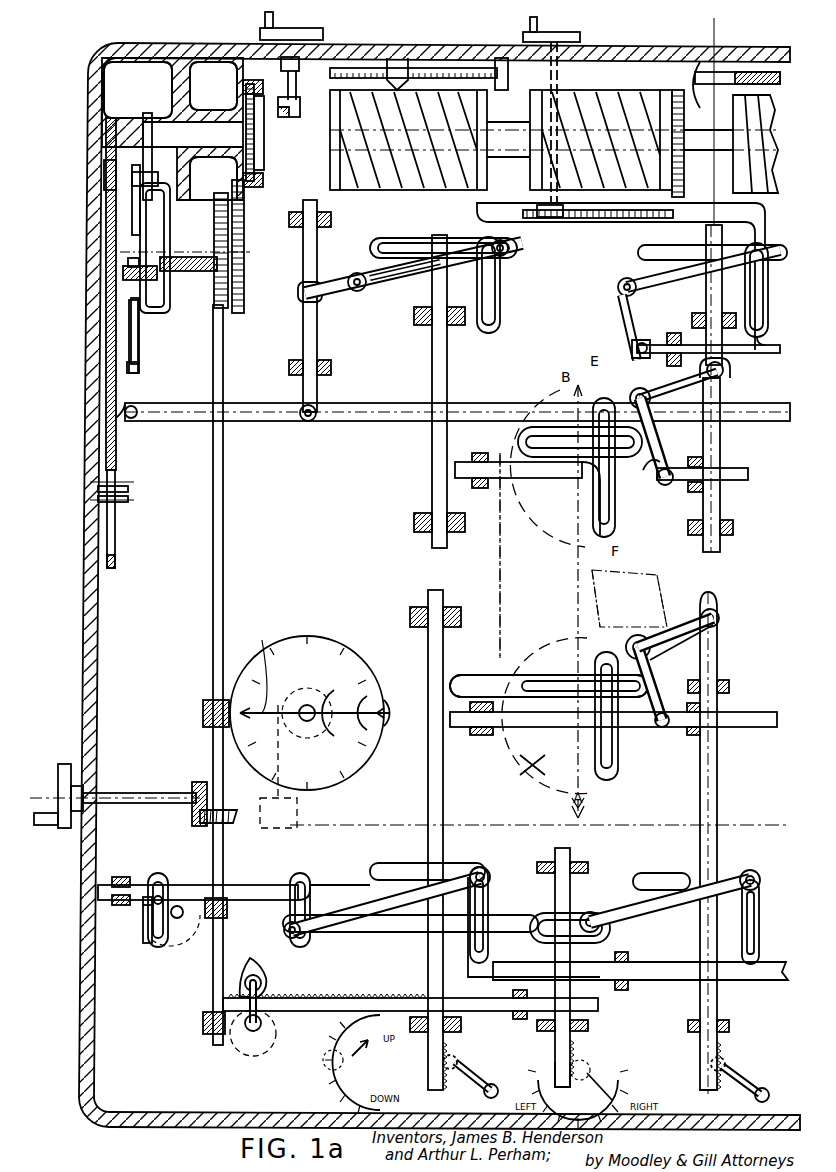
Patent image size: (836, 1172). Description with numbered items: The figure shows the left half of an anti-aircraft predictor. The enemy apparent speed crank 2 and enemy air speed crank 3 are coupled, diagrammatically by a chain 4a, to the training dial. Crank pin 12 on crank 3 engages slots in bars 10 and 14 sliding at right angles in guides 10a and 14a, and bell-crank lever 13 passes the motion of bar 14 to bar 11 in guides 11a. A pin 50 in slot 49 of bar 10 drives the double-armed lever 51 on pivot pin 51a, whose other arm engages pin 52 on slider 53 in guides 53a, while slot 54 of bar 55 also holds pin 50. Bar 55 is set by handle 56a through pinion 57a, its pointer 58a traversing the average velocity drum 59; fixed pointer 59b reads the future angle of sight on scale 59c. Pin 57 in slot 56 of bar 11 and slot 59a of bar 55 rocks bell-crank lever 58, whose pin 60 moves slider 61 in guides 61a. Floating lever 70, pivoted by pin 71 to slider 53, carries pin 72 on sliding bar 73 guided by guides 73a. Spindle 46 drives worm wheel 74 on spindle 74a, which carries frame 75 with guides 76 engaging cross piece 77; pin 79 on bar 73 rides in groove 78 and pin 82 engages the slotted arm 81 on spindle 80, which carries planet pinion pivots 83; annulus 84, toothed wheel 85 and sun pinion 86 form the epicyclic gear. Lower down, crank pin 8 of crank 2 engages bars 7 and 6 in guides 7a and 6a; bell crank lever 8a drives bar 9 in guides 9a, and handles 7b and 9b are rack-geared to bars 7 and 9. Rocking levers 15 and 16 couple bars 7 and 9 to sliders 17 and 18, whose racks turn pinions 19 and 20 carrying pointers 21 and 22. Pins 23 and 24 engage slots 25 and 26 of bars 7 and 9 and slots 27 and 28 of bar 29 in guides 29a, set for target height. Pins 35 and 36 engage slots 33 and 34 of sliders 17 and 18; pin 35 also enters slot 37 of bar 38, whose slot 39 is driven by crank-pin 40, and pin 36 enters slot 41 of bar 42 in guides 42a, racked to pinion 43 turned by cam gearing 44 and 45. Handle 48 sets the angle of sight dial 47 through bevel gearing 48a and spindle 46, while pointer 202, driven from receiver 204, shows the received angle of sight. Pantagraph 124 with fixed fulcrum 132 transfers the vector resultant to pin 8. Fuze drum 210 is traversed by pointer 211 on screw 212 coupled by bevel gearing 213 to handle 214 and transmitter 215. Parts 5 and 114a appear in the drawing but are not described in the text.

The enemy apparent speed crank 2 is at (532, 766).
The enemy air speed crank 3 is at (546, 535).
The chain 4a is at (500, 570).
The slotted bar 5 is at (540, 676).
The sliding bar 6 is at (563, 730).
The guides 6a is at (480, 736).
The sliding bar 7 is at (428, 779).
The guides 7a is at (411, 607).
The handle 7b is at (463, 1077).
The crank pin 8 is at (600, 660).
The bell crank lever 8a is at (648, 632).
The sliding bar 9 is at (717, 808).
The guides 9a is at (730, 688).
The handle 9b is at (742, 1088).
The sliding bar 10 is at (414, 523).
The guides 10a is at (414, 318).
The sliding bar 11 is at (690, 518).
The guides 11a is at (696, 313).
The crank pin 12 is at (605, 398).
The bell-crank lever 13 is at (655, 444).
The sliding bar 14 is at (543, 480).
The guides 14a is at (478, 489).
The bar 114a is at (670, 482).
The rocking lever 15 is at (376, 920).
The rocking lever 16 is at (660, 919).
The slider 17 is at (300, 998).
The slider 18 is at (571, 1041).
The pinion 19 is at (330, 1070).
The pinion 20 is at (590, 1066).
The indicating pointer 21 is at (365, 1052).
The indicating pointer 22 is at (612, 1084).
The pin 23 is at (486, 869).
The pin 24 is at (755, 893).
The slot 25 is at (385, 871).
The slot 26 is at (652, 880).
The slot 27 is at (488, 912).
The slot 28 is at (758, 943).
The sliding bar 29 is at (730, 976).
The guides 29a is at (623, 991).
The slot 33 is at (340, 934).
The slot 34 is at (532, 929).
The pin 35 is at (283, 930).
The pin 36 is at (600, 931).
The slot 37 is at (291, 878).
The sliding bar 38 is at (258, 877).
The slot 39 is at (150, 943).
The crank-pin 40 is at (166, 875).
The slot 41 is at (578, 888).
The sliding bar 42 is at (480, 1012).
The guides 42a is at (521, 1020).
The pinion 43 is at (244, 981).
The cam gearing 44 is at (262, 963).
The cam gearing 45 is at (270, 1046).
The spindle 46 is at (213, 652).
The angle of sight dial 47 is at (323, 650).
The handle 48 is at (60, 782).
The bevel gearing 48a is at (192, 790).
The slot 49 is at (400, 240).
The pin 50 is at (505, 257).
The double-armed lever 51 is at (376, 294).
The pivot pin 51a is at (356, 273).
The pin 52 is at (300, 298).
The slider 53 is at (303, 346).
The guides 53a is at (331, 219).
The slot 54 is at (498, 320).
The sliding bar 55 is at (572, 225).
The slot 56 is at (680, 245).
The handle 56a is at (580, 37).
The pin 57 is at (768, 273).
The pinion 57a is at (563, 218).
The bell-crank lever 58 is at (625, 300).
The pointer 58a is at (582, 220).
The average velocity drum 59 is at (636, 104).
The slot 59a is at (768, 332).
The fixed pointer 59b is at (712, 72).
The scale 59c is at (688, 180).
The pin 60 is at (636, 349).
The slider 61 is at (730, 370).
The guides 61a is at (672, 334).
The floating lever 70 is at (402, 403).
The pin 71 is at (313, 421).
The pin 72 is at (135, 418).
The sliding bar 73 is at (106, 432).
The guides 73a is at (104, 176).
The worm wheel 74 is at (214, 292).
The spindle 74a is at (204, 198).
The frame 75 is at (151, 314).
The guides 76 is at (132, 200).
The cross piece 77 is at (140, 238).
The groove 78 is at (123, 276).
The pin 79 is at (128, 263).
The spindle 80 is at (168, 130).
The radially slotted arm 81 is at (142, 140).
The pin 82 is at (164, 278).
The planet pinion pivots 83 is at (264, 128).
The internally toothed annulus 84 is at (237, 96).
The toothed wheel 85 is at (245, 240).
The sun pinion 86 is at (262, 142).
The pantagraph 124 is at (650, 632).
The fulcrum 132 is at (657, 652).
The angle of sight pointer 202 is at (262, 645).
The receiver 204 is at (292, 818).
The fuze drum 210 is at (432, 190).
The pointer 211 is at (398, 66).
The screw 212 is at (450, 70).
The bevel gearing 213 is at (286, 60).
The handle 214 is at (302, 33).
The transmitter 215 is at (298, 110).